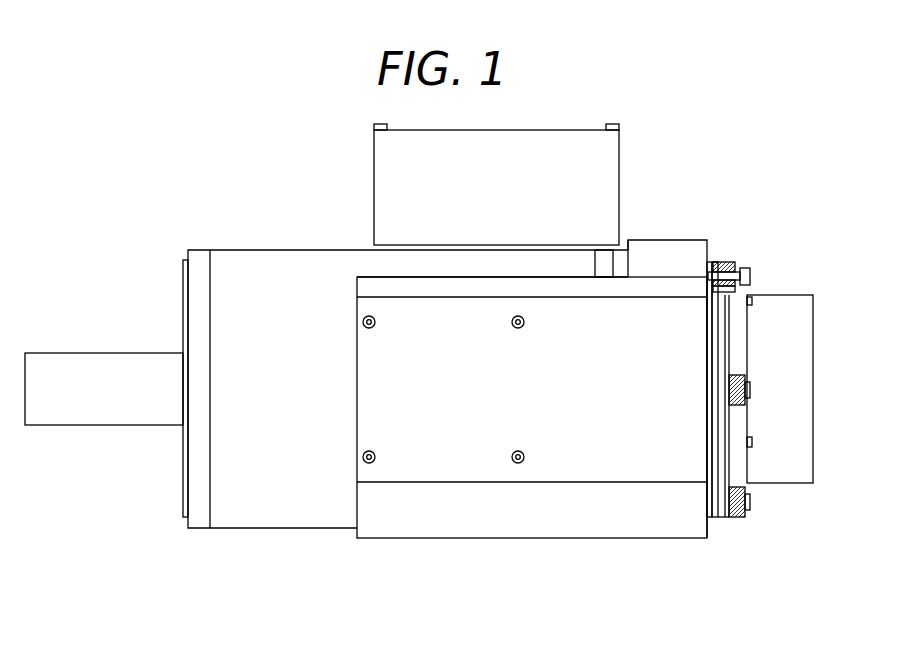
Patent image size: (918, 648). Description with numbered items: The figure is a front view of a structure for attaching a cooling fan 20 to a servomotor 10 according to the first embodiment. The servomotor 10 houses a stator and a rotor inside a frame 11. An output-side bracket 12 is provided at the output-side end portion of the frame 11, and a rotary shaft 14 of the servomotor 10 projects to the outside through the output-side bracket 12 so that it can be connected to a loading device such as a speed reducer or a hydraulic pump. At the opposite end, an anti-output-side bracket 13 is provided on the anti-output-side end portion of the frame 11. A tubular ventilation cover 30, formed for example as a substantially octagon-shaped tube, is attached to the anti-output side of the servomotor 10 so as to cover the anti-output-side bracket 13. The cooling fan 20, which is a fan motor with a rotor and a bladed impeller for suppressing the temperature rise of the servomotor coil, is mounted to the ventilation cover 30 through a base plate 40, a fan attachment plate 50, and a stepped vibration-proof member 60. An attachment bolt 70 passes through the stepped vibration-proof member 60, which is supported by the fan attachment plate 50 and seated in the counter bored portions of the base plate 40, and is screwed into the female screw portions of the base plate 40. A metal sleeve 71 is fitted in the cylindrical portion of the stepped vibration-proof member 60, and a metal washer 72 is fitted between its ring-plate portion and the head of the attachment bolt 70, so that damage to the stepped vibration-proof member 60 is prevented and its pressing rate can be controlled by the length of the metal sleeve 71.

The servomotor 10 is at (366, 325).
The frame 11 is at (290, 268).
The output-side bracket 12 is at (199, 278).
The anti-output-side bracket 13 is at (602, 263).
The rotary shaft 14 is at (108, 373).
The cooling fan 20 is at (792, 324).
The ventilation cover 30 is at (671, 504).
The base plate 40 is at (714, 262).
The fan attachment plate 50 is at (733, 268).
The stepped vibration-proof member 60 is at (718, 262).
The attachment bolt 70 is at (752, 283).
The metal sleeve 71 is at (737, 272).
The metal washer 72 is at (745, 281).